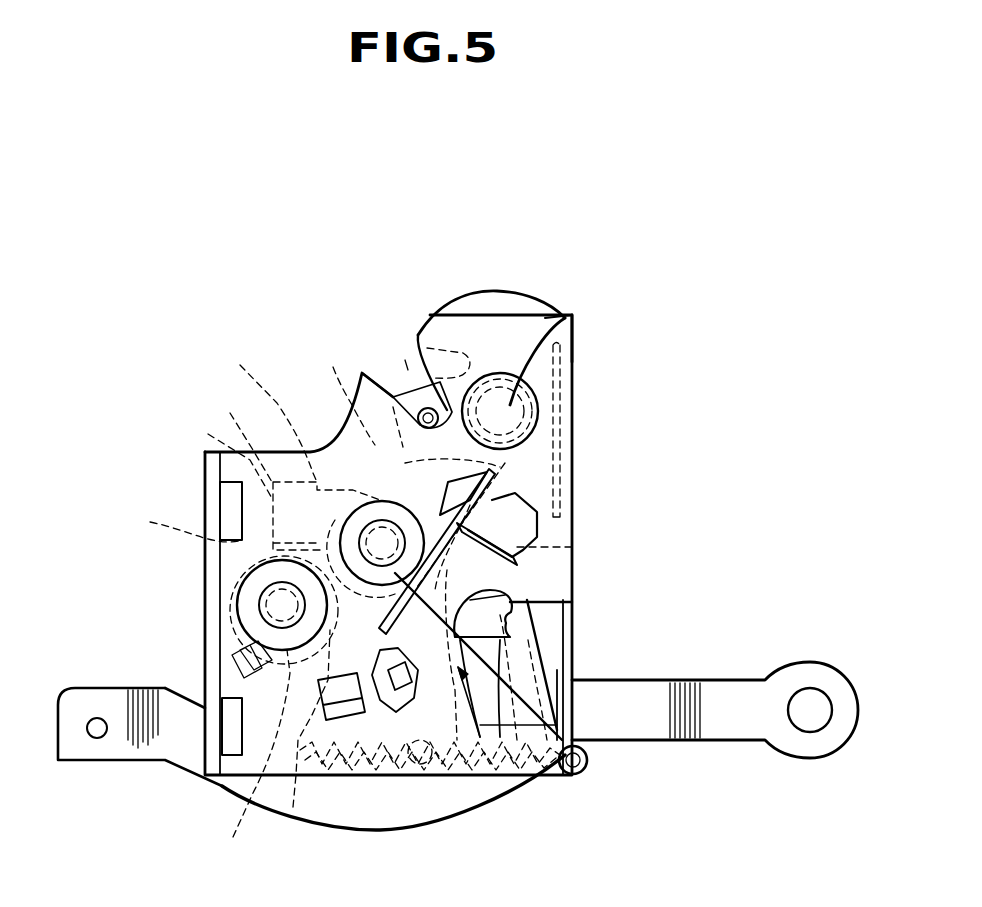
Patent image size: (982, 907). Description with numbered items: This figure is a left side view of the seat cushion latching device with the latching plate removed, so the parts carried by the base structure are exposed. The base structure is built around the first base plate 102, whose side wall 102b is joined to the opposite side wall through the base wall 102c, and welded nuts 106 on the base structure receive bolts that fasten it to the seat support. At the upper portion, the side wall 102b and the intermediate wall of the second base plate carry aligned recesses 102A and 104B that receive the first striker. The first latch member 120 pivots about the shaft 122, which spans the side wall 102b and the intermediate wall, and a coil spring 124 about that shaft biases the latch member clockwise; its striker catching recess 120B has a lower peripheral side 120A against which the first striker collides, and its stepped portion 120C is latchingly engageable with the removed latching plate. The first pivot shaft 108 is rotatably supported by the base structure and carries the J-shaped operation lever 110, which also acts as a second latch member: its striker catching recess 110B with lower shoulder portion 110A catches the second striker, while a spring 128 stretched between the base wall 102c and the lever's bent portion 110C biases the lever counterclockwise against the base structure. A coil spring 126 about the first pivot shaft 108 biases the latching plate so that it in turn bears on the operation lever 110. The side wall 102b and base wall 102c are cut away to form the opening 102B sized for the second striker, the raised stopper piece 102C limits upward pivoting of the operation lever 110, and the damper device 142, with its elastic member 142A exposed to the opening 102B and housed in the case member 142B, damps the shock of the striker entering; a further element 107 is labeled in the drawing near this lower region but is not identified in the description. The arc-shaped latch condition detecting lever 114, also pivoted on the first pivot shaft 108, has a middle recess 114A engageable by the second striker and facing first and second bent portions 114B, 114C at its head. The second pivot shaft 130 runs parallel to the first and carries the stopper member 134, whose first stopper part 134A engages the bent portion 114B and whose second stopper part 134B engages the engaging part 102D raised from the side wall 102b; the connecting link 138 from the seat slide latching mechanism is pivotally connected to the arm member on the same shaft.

The first base plate 102 is at (572, 405).
The recess 102A is at (362, 373).
The recess 104B is at (371, 380).
The side wall 102b is at (540, 520).
The opening or recess 102B is at (512, 603).
The base wall 102c is at (572, 362).
The raised stopper piece 102C is at (340, 715).
The engaging part 102D is at (212, 700).
The welded nuts 106 is at (228, 498).
The spring end 107 is at (527, 795).
The first pivot shaft 108 is at (380, 541).
The operation lever 110 is at (395, 810).
The lower shoulder portion 110A is at (543, 623).
The striker catching recess 110B is at (572, 640).
The bent portion 110C is at (294, 762).
The latch condition detecting lever 114 is at (267, 410).
The recess 114A is at (572, 547).
The first bent portion 114B is at (235, 430).
The second bent portion 114C is at (210, 456).
The first latch member 120 is at (496, 294).
The lower peripheral side 120A is at (408, 370).
The striker catching recess 120B is at (442, 348).
The stepped portion 120C is at (350, 392).
The shaft 122 is at (570, 318).
The coil spring 124 is at (511, 378).
The coil spring 126 is at (497, 476).
The spring 128 is at (585, 752).
The second pivot shaft 130 is at (262, 608).
The stopper member 134 is at (237, 568).
The first stopper part 134A is at (243, 540).
The second stopper part 134B is at (242, 760).
The connecting link 138 is at (808, 660).
The damper device 142 is at (475, 740).
The elastic member 142A is at (497, 740).
The case member 142B is at (540, 493).